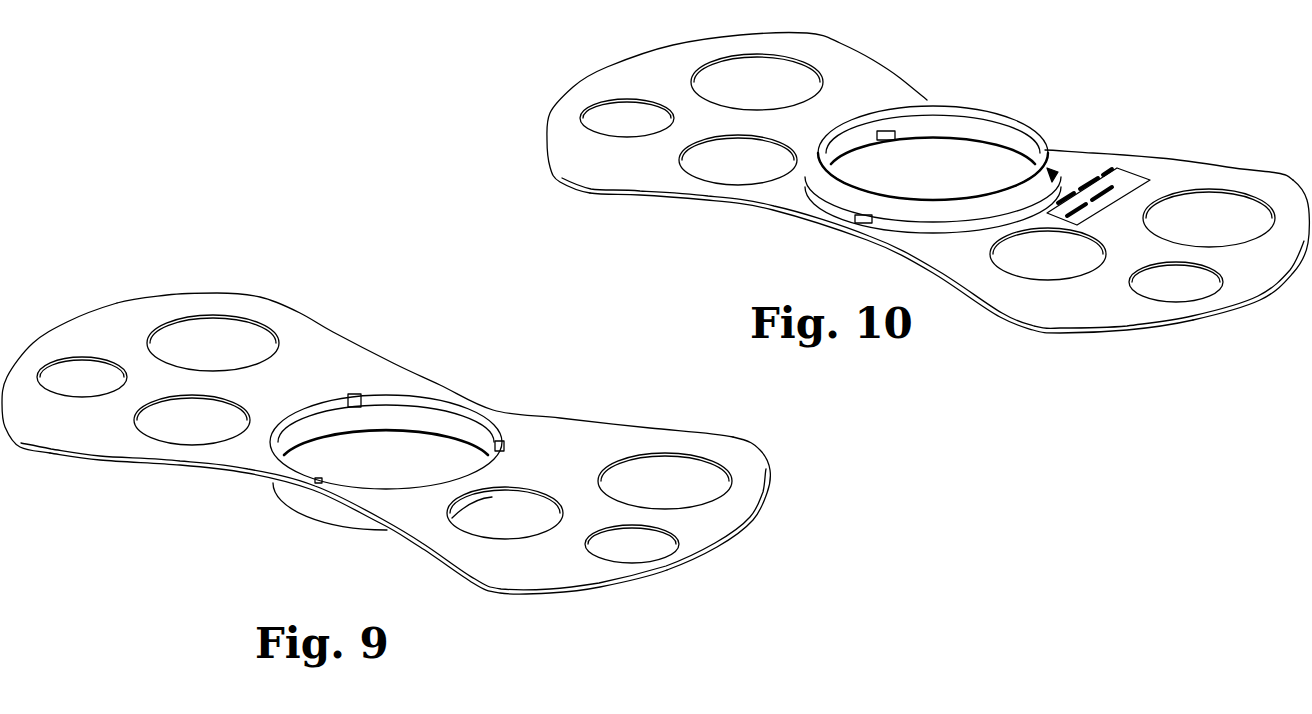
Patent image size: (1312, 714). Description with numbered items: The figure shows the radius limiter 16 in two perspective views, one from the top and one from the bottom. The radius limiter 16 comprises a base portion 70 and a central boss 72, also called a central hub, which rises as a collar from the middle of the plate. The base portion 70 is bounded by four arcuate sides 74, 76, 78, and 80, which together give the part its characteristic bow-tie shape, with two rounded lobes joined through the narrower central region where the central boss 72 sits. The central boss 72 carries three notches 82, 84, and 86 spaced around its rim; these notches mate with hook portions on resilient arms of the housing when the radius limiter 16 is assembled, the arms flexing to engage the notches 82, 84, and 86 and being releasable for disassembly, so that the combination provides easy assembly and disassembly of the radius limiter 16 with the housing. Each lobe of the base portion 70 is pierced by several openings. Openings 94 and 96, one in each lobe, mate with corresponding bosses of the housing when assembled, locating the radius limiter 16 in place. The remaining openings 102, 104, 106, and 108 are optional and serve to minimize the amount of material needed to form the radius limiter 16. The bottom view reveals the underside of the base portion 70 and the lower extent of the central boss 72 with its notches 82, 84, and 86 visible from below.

In FIG. 9, the radius limiter 16 is at (402, 458).
In FIG. 10, the radius limiter 16 is at (928, 220).
In FIG. 9, the base portion 70 is at (402, 435).
In FIG. 10, the base portion 70 is at (928, 197).
In FIG. 9, the central boss 72 is at (325, 508).
In FIG. 10, the central boss 72 is at (982, 130).
In FIG. 9, the arcuate side 74 is at (190, 475).
In FIG. 10, the arcuate side 74 is at (773, 215).
In FIG. 9, the arcuate side 76 is at (70, 330).
In FIG. 10, the arcuate side 76 is at (1227, 297).
In FIG. 9, the arcuate side 78 is at (393, 362).
In FIG. 10, the arcuate side 78 is at (1173, 162).
In FIG. 9, the arcuate side 80 is at (733, 530).
In FIG. 10, the arcuate side 80 is at (640, 72).
In FIG. 9, the notch 82 is at (320, 482).
In FIG. 10, the notch 82 is at (862, 227).
In FIG. 9, the notch 84 is at (357, 393).
In FIG. 10, the notch 84 is at (1053, 173).
In FIG. 9, the notch 86 is at (498, 437).
In FIG. 10, the notch 86 is at (888, 133).
In FIG. 9, the opening 94 is at (60, 378).
In FIG. 9, the opening 96 is at (643, 547).
In FIG. 9, the optional opening 102 is at (217, 337).
In FIG. 9, the optional opening 104 is at (168, 423).
In FIG. 9, the optional opening 106 is at (677, 477).
In FIG. 9, the optional opening 108 is at (493, 523).